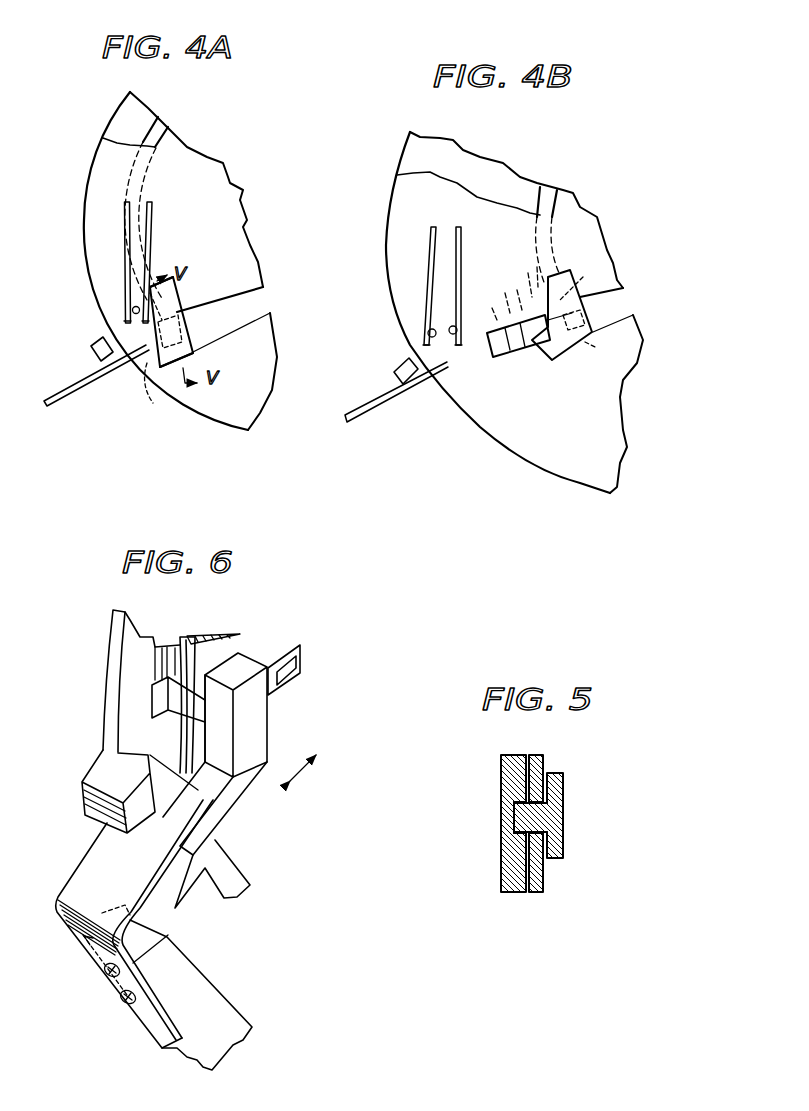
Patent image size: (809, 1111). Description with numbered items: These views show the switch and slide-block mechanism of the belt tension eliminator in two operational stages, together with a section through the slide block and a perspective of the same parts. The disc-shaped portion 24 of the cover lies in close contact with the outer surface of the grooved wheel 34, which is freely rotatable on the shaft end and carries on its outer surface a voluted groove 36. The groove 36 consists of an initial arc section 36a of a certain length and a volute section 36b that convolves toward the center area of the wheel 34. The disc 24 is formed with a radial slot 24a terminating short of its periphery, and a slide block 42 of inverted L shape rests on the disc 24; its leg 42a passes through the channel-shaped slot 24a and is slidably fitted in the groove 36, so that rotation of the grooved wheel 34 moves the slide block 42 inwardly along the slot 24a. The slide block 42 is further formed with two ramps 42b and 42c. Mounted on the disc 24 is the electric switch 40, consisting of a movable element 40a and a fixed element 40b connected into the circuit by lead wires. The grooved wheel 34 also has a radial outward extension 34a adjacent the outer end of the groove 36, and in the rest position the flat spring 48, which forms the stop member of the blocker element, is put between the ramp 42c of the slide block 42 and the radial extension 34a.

In FIG. 4A, the disc-shaped portion 24 is at (231, 212).
In FIG. 4B, the disc-shaped portion 24 is at (618, 378).
In FIG. 6, the disc-shaped portion 24 is at (251, 858).
In FIG. 5, the disc-shaped portion 24 is at (542, 877).
In FIG. 4A, the radial slot 24a is at (243, 308).
In FIG. 4B, the radial slot 24a is at (607, 308).
In FIG. 6, the radial slot 24a is at (278, 667).
In FIG. 5, the radial slot 24a is at (540, 827).
In FIG. 4A, the grooved wheel 34 is at (118, 117).
In FIG. 4B, the grooved wheel 34 is at (473, 167).
In FIG. 6, the grooved wheel 34 is at (128, 645).
In FIG. 5, the grooved wheel 34 is at (508, 872).
In FIG. 4A, the radial outward extension 34a is at (97, 348).
In FIG. 4B, the radial outward extension 34a is at (397, 368).
In FIG. 6, the radial outward extension 34a is at (107, 770).
In FIG. 5, the voluted groove 36 is at (517, 807).
In FIG. 4A, the initial arc section 36a is at (197, 347).
In FIG. 4B, the initial arc section 36a is at (512, 340).
In FIG. 6, the initial arc section 36a is at (163, 655).
In FIG. 4A, the volute section 36b is at (157, 128).
In FIG. 4B, the volute section 36b is at (560, 178).
In FIG. 4A, the electric switch 40 is at (161, 219).
In FIG. 4B, the electric switch 40 is at (450, 237).
In FIG. 4A, the movable element 40a is at (124, 327).
In FIG. 4B, the movable element 40a is at (452, 342).
In FIG. 4A, the fixed element 40b is at (130, 310).
In FIG. 4B, the fixed element 40b is at (427, 334).
In FIG. 4A, the slide block 42 is at (170, 378).
In FIG. 4B, the slide block 42 is at (571, 358).
In FIG. 6, the slide block 42 is at (271, 740).
In FIG. 5, the slide block 42 is at (560, 783).
In FIG. 4A, the leg 42a is at (153, 403).
In FIG. 4B, the leg 42a is at (583, 277).
In FIG. 6, the leg 42a is at (158, 703).
In FIG. 5, the leg 42a is at (518, 822).
In FIG. 4A, the ramp 42b is at (160, 302).
In FIG. 4B, the ramp 42b is at (545, 280).
In FIG. 6, the ramp 42b is at (222, 727).
In FIG. 4A, the ramp 42c is at (121, 363).
In FIG. 4B, the ramp 42c is at (530, 300).
In FIG. 6, the ramp 42c is at (215, 777).
In FIG. 4A, the flat spring 48 is at (73, 397).
In FIG. 4B, the flat spring 48 is at (390, 403).
In FIG. 6, the flat spring 48 is at (92, 870).